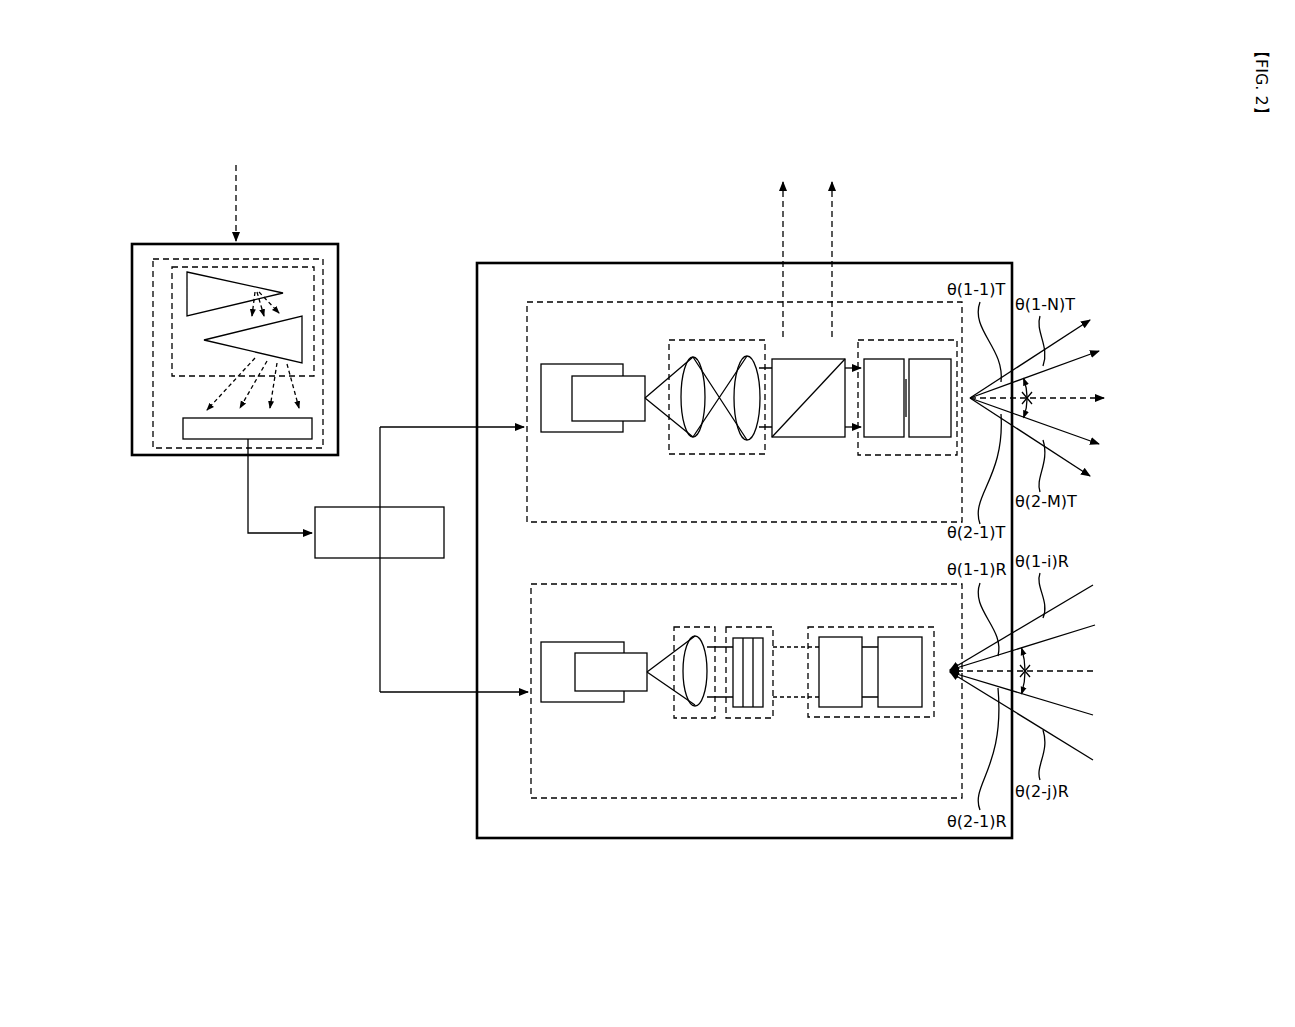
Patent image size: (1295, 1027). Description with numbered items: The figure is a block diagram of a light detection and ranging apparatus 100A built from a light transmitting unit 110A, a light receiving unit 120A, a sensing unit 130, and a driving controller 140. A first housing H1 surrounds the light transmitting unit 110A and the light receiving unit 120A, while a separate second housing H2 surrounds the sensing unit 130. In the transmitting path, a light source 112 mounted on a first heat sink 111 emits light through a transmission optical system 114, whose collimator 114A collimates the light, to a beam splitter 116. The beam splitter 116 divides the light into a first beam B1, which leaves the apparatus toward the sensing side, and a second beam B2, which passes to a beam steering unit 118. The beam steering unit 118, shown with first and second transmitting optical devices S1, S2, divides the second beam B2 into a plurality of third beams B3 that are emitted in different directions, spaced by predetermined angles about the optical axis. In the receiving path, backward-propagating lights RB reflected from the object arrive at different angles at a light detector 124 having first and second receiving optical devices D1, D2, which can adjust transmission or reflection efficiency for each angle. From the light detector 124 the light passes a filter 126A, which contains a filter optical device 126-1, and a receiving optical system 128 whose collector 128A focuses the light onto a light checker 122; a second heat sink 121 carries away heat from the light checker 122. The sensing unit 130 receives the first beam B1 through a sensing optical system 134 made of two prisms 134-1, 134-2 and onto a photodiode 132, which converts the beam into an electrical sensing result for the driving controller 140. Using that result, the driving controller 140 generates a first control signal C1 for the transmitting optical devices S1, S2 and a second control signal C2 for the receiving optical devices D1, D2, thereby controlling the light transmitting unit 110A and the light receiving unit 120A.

The LiDAR apparatus 100A is at (1066, 175).
The first housing H1 is at (1012, 270).
The second housing H2 is at (338, 252).
The light transmitting unit 110A is at (880, 302).
The first heat sink 111 is at (560, 432).
The light source 112 is at (632, 382).
The transmission optical system 114 is at (713, 455).
The collimator 114A is at (744, 358).
The beam splitter 116 is at (810, 440).
The beam steering unit 118 is at (907, 426).
The first transmitting optical device S1 is at (884, 398).
The second transmitting optical device S2 is at (930, 398).
The light receiving unit 120A is at (825, 798).
The second heat sink 121 is at (560, 702).
The light checker 122 is at (632, 658).
The light detector 124 is at (871, 700).
The first receiving optical device D1 is at (840, 672).
The second receiving optical device D2 is at (900, 672).
The filter 126A is at (748, 718).
The filter optical device 126-1 is at (756, 638).
The receiving optical system 128 is at (693, 718).
The collector 128A is at (690, 641).
The sensing unit 130 is at (323, 292).
The photodiode 132 is at (312, 428).
The sensing optical system 134 is at (314, 345).
The prism 134-1 is at (243, 288).
The prism 134-2 is at (294, 324).
The driving controller 140 is at (332, 558).
The first beam B1 is at (234, 196).
The second beam B2 is at (852, 366).
The third beams B3 is at (1160, 492).
The backward-propagating lights RB is at (1155, 765).
The first control signal C1 is at (452, 415).
The second control signal C2 is at (454, 706).